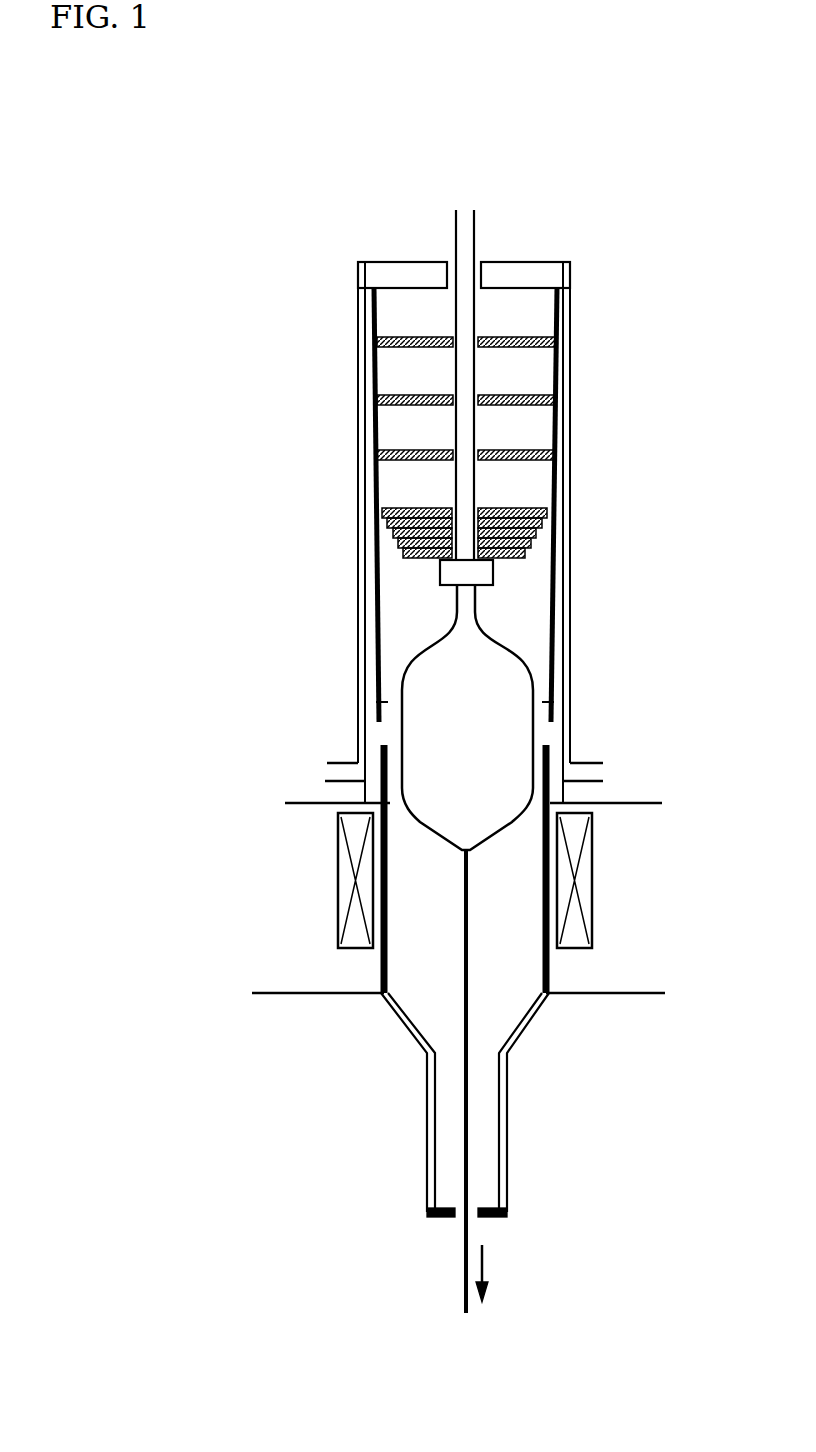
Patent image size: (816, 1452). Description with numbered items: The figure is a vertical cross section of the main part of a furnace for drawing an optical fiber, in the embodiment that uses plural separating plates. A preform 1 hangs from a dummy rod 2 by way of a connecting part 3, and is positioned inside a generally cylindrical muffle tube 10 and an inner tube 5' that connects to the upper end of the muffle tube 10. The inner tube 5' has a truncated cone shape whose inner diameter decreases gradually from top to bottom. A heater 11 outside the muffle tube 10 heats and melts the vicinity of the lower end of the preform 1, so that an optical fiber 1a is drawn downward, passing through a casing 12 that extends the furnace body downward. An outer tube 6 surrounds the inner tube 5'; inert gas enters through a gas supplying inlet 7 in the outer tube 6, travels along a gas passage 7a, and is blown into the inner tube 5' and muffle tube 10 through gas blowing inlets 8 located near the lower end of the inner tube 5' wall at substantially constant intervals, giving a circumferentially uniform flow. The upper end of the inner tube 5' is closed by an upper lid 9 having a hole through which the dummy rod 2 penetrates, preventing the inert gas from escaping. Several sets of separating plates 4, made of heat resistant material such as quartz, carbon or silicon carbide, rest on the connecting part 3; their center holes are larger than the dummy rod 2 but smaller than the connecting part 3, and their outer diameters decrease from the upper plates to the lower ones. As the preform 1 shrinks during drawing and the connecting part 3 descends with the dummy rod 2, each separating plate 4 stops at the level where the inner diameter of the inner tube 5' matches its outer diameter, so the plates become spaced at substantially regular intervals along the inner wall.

The preform 1 is at (498, 685).
The optical fiber 1a is at (468, 1150).
The dummy rod 2 is at (463, 254).
The connecting part 3 is at (493, 578).
The separating plate 4 is at (437, 505).
The inner tube 5' is at (458, 505).
The outer tube 6 is at (358, 488).
The gas supplying inlet 7 is at (338, 773).
The gas passage 7a is at (553, 757).
The gas blowing inlet 8 is at (380, 733).
The upper lid 9 is at (536, 277).
The muffle tube 10 is at (377, 957).
The heater 11 is at (338, 877).
The casing for downward extension of a furnace body 12 is at (507, 1083).